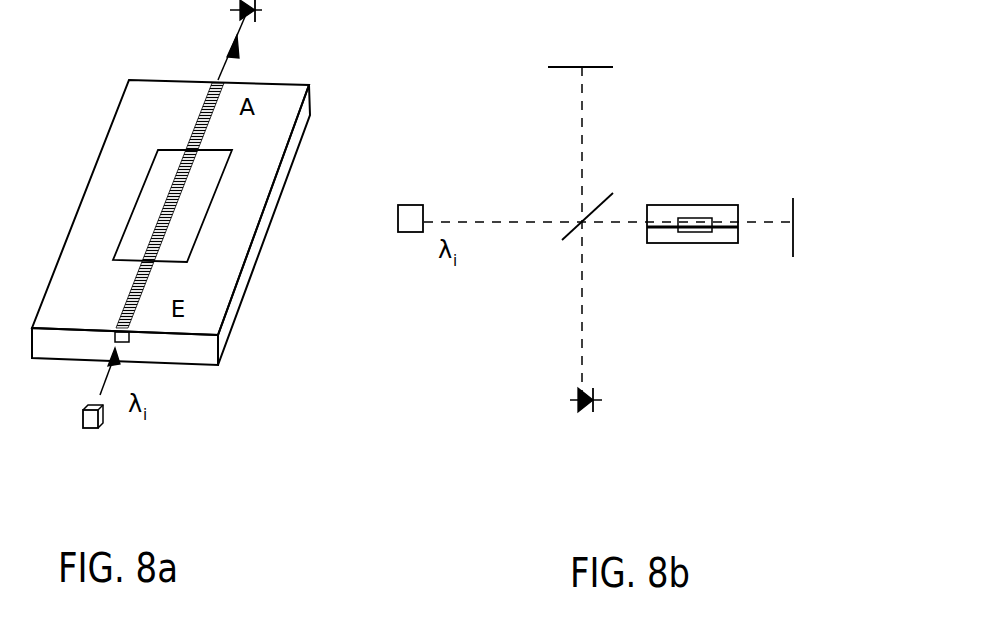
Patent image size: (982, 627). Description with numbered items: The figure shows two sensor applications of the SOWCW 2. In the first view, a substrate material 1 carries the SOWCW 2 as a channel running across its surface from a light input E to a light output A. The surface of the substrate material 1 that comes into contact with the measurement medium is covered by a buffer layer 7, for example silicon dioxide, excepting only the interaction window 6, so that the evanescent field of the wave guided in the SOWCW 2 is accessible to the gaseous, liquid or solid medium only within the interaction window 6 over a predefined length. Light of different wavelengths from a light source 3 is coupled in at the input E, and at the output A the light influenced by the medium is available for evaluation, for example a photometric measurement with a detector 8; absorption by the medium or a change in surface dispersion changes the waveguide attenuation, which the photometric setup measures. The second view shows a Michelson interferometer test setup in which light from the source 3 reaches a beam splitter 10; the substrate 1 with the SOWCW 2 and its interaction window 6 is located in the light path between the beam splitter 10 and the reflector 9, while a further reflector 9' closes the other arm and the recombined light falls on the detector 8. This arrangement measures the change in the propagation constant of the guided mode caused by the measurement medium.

In FIG. 8a, the substrate material 1 is at (305, 115).
In FIG. 8b, the substrate material 1 is at (655, 243).
In FIG. 8a, the SOWCW 2 is at (202, 115).
In FIG. 8b, the SOWCW 2 is at (727, 232).
In FIG. 8a, the light source 3 is at (102, 425).
In FIG. 8b, the light source 3 is at (413, 212).
In FIG. 8a, the interaction window 6 is at (189, 206).
In FIG. 8b, the interaction window 6 is at (697, 232).
In FIG. 8a, the buffer layer 7 is at (240, 230).
In FIG. 8a, the detector 8 is at (262, 15).
In FIG. 8b, the detector 8 is at (597, 393).
In FIG. 8b, the reflector 9 is at (817, 218).
In FIG. 8b, the mirror 9' is at (599, 46).
In FIG. 8b, the beam splitter 10 is at (613, 193).